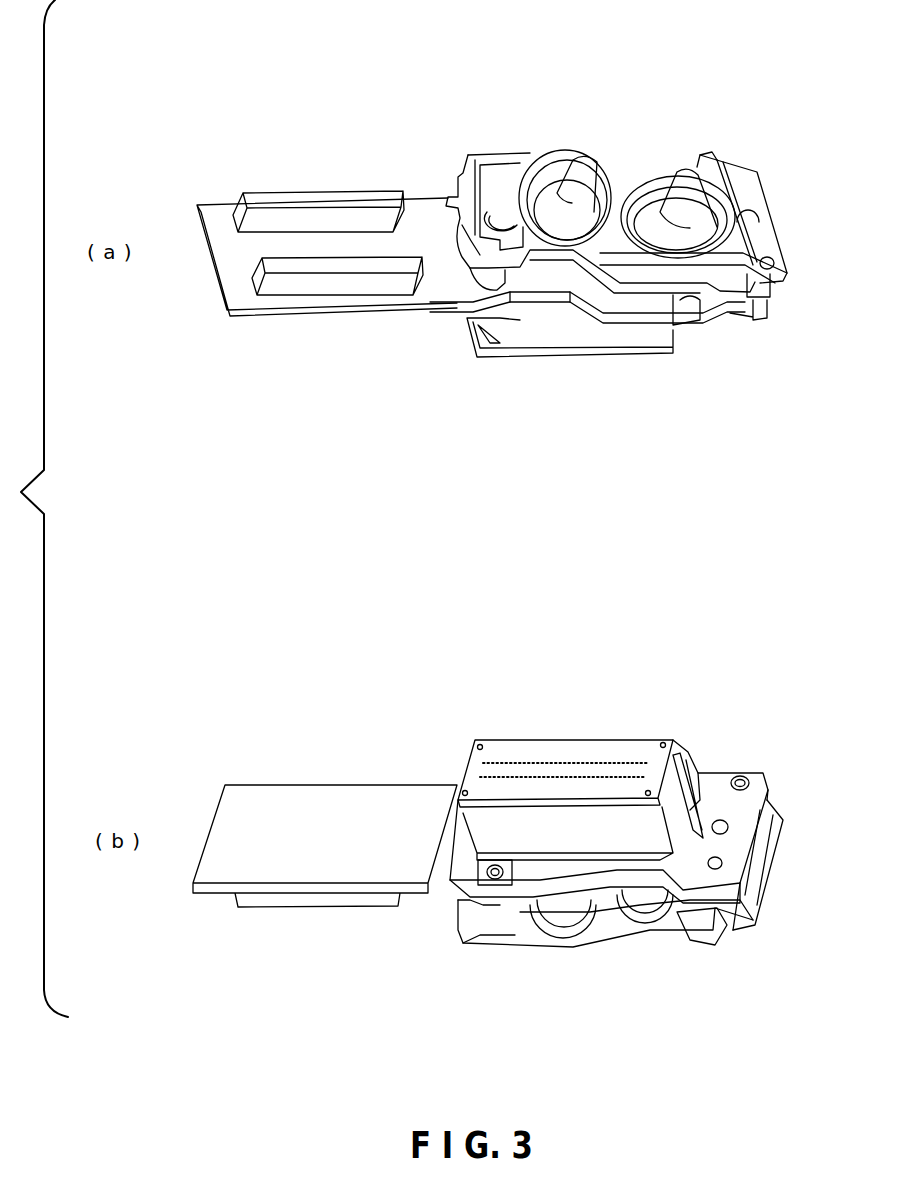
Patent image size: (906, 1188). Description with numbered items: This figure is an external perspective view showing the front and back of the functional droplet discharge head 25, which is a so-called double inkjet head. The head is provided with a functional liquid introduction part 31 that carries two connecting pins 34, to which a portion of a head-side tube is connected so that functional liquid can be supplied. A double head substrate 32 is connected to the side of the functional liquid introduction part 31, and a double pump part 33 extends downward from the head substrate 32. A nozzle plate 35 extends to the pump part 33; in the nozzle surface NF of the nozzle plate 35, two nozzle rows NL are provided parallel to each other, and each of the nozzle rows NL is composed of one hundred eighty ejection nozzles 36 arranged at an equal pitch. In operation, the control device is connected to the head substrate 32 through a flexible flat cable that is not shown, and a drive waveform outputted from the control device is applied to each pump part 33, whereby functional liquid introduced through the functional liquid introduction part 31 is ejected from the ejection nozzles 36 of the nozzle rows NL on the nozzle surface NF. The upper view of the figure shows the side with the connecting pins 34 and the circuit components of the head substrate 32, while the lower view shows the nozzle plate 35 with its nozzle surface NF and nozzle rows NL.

The functional droplet discharge head 25 is at (567, 70).
The functional liquid introduction part 31 is at (765, 196).
The head substrate 32 is at (268, 311).
The pump part 33 is at (683, 348).
The connecting pins 34 is at (683, 170).
The nozzle plate 35 is at (643, 357).
The ejection nozzles 36 is at (512, 777).
The nozzle surface NF is at (577, 746).
The nozzle rows NL is at (463, 762).